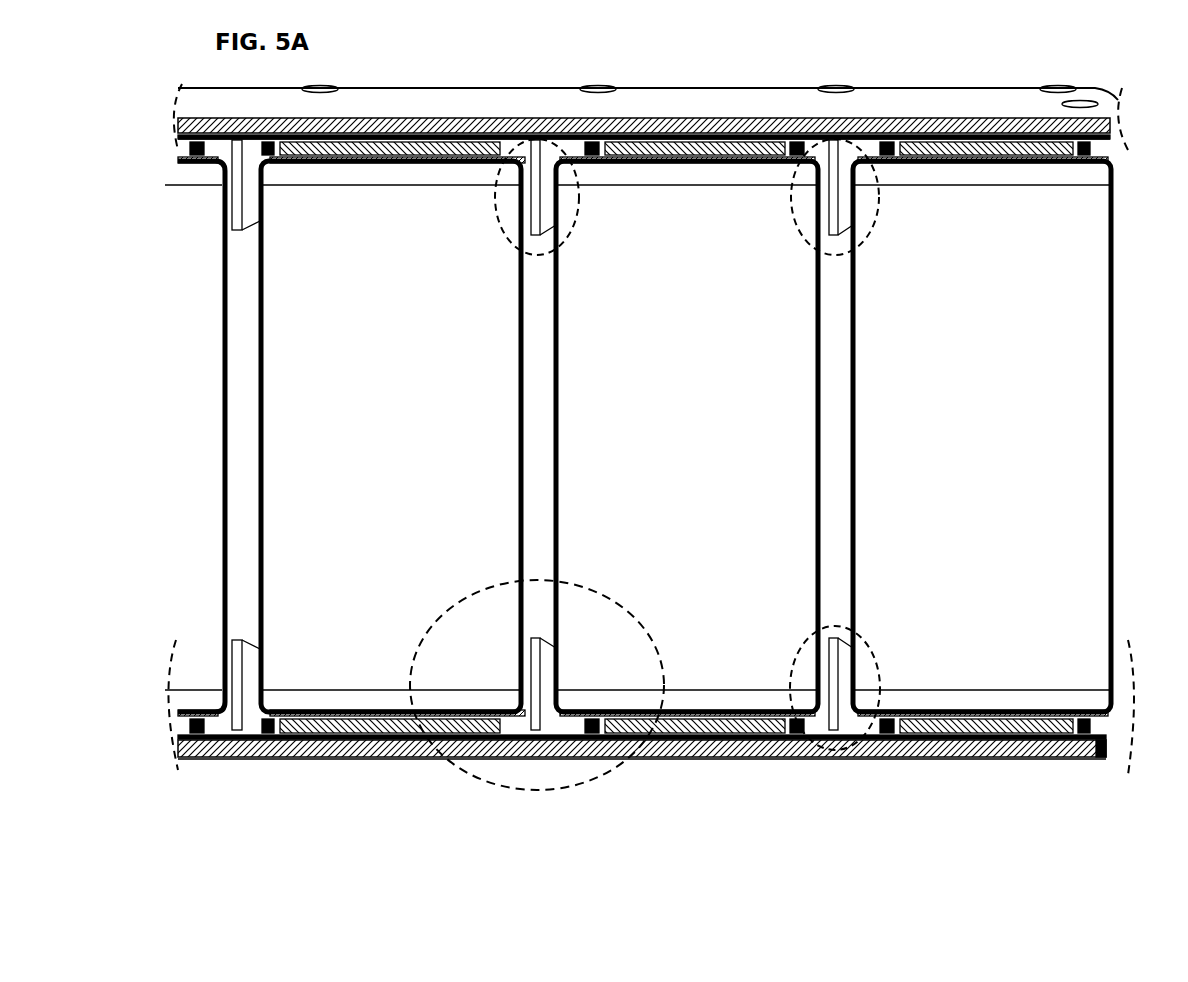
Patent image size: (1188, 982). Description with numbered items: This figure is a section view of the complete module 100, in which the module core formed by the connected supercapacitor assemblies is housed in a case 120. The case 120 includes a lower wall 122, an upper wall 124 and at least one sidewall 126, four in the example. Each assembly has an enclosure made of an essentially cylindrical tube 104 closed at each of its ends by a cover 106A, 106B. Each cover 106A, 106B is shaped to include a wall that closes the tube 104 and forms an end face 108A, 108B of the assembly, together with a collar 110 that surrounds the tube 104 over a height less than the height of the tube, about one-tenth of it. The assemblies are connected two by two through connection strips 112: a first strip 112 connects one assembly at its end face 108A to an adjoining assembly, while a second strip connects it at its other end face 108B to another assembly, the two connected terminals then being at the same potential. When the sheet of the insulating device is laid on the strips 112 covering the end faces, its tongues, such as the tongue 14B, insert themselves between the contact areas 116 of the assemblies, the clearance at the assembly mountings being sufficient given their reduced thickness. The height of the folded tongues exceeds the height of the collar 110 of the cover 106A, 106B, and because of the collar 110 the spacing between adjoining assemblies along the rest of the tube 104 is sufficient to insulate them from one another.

The module 100 is at (676, 435).
The tube 104 is at (675, 436).
The cover 106A is at (330, 722).
The cover 106B is at (838, 180).
The end face 108A is at (920, 716).
The end face 108B is at (640, 162).
The collar 110 is at (545, 185).
The connection strip 112 is at (712, 722).
The contact area 116 is at (590, 140).
The case 120 is at (368, 92).
The lower wall 122 is at (392, 748).
The upper wall 124 is at (960, 120).
The sidewall 126 is at (1118, 328).
The tongue 14B is at (528, 720).